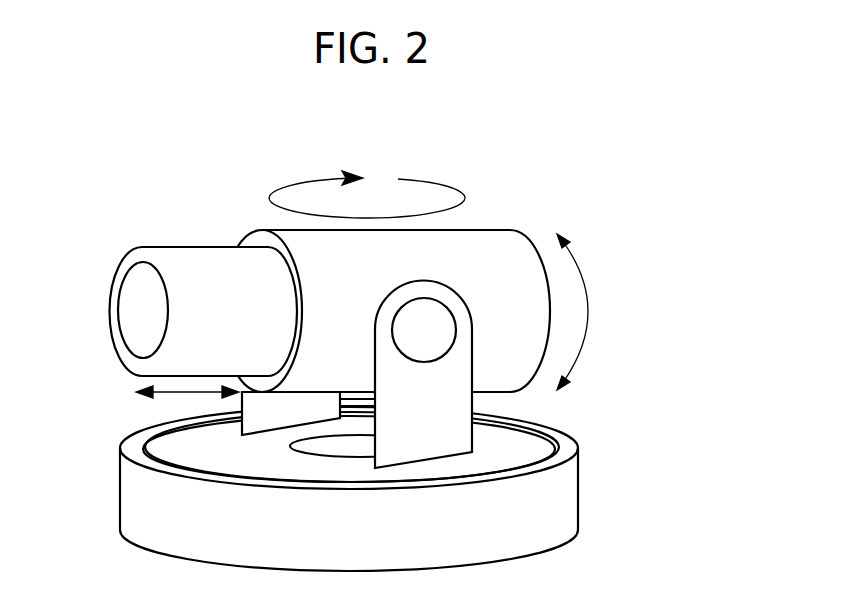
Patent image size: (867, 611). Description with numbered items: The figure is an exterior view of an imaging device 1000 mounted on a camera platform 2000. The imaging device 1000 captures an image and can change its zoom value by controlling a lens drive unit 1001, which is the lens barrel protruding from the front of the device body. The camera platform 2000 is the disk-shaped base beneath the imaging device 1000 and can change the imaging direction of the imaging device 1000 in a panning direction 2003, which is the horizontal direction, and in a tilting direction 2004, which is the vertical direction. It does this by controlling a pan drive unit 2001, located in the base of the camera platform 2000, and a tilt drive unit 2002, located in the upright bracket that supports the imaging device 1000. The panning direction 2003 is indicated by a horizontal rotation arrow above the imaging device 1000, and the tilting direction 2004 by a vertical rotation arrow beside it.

The imaging device 1000 is at (504, 247).
The lens drive unit 1001 is at (197, 257).
The camera platform 2000 is at (558, 505).
The pan drive unit 2001 is at (350, 444).
The tilt drive unit 2002 is at (408, 325).
The panning direction 2003 is at (418, 180).
The tilting direction 2004 is at (588, 310).